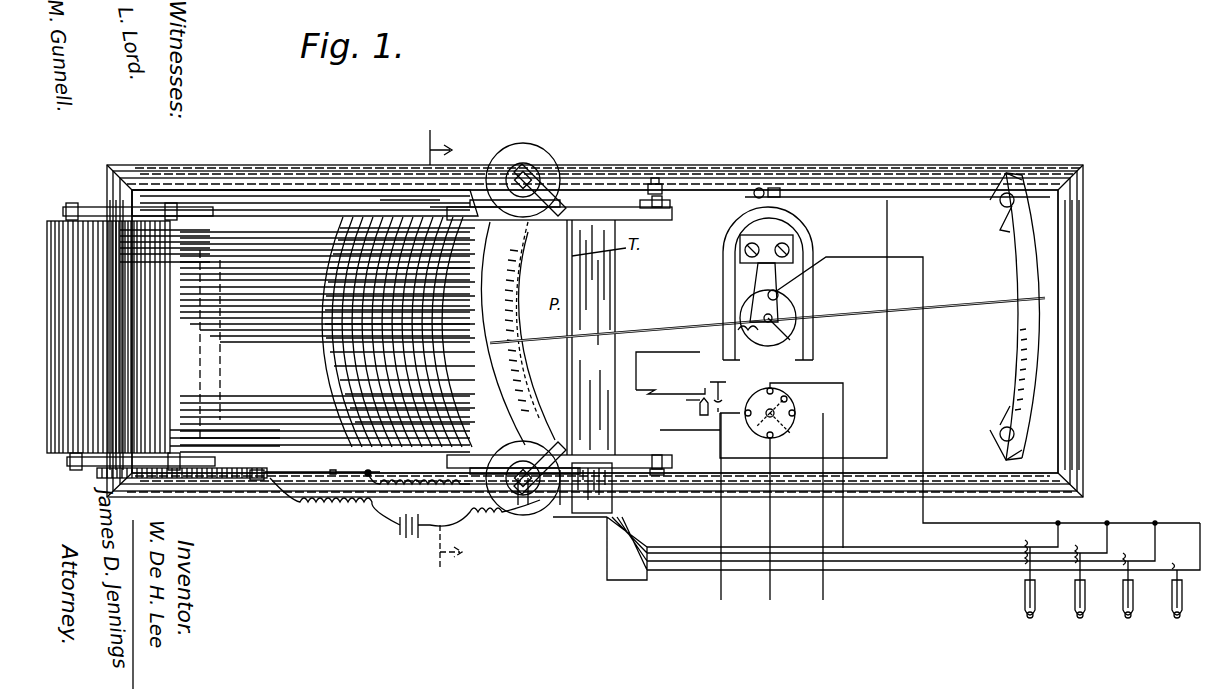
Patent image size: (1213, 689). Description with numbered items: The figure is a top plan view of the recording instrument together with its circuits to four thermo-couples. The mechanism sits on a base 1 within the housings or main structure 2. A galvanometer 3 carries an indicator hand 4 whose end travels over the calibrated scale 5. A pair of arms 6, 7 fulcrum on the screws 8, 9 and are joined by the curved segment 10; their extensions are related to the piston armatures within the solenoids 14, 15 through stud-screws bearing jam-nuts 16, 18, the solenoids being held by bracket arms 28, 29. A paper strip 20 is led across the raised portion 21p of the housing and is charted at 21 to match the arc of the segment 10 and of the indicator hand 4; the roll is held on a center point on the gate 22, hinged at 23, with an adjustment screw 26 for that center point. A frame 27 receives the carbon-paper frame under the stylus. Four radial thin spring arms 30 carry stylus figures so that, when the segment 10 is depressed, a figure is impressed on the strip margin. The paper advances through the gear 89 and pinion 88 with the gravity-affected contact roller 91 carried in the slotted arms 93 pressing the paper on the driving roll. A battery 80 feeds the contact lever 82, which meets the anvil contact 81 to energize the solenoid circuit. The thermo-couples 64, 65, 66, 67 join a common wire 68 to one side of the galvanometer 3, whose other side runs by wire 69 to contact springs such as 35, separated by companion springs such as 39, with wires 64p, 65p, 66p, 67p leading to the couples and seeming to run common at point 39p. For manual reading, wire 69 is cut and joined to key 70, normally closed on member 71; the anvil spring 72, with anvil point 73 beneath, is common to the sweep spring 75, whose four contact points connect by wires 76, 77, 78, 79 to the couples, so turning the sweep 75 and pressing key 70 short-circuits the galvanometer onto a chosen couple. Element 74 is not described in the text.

The base 1 is at (700, 170).
The housings or main structure 2 is at (862, 213).
The galvanometer 3 is at (736, 310).
The indicator hand 4 is at (678, 330).
The calibrated scale 5 is at (1024, 345).
The arm 6 is at (680, 512).
The arm 7 is at (600, 212).
The screw 8 is at (666, 470).
The screw 9 is at (668, 196).
The segment 10 is at (510, 360).
The solenoid 14 is at (510, 500).
The solenoid 15 is at (528, 160).
The jam-nut 16 is at (518, 500).
The jam-nut 18 is at (520, 178).
The paper strip 20 is at (290, 300).
The chart 21 is at (325, 373).
The raised portion of the housing 21p is at (345, 205).
The gate 22 is at (585, 200).
The hinge 23 is at (762, 188).
The adjustment screw 26 is at (650, 184).
The frame 27 is at (440, 203).
The bracket arm 28 is at (470, 475).
The bracket arm 29 is at (476, 205).
The thin spring arms 30 is at (530, 505).
The contact spring 35 is at (560, 515).
The contact spring 39 is at (570, 517).
The point 39p is at (606, 520).
The thermo-couple 64 is at (1180, 610).
The thermo-couple 65 is at (1132, 610).
The thermo-couple 66 is at (1084, 610).
The thermo-couple 67 is at (1034, 610).
The wire 64p is at (860, 571).
The wire 65p is at (882, 563).
The wire 66p is at (905, 556).
The wire 67p is at (928, 548).
The common wire 68 is at (836, 260).
The circuit wire 69 is at (672, 352).
The contact switch member 70 is at (722, 393).
The switch member 71 is at (670, 385).
The anvil contact spring 72 is at (704, 411).
The anvil point 73 is at (680, 411).
The wire 74 is at (690, 427).
The sweep contact spring 75 is at (782, 420).
The wire 76 is at (789, 329).
The wire 77 is at (768, 450).
The wire 78 is at (822, 516).
The wire 79 is at (800, 384).
The battery 80 is at (405, 540).
The anvil contact 81 is at (356, 478).
The contact lever 82 is at (305, 495).
The pinion 88 is at (262, 482).
The gear 89 is at (190, 480).
The contact roller 91 is at (163, 337).
The arms 93 is at (107, 210).